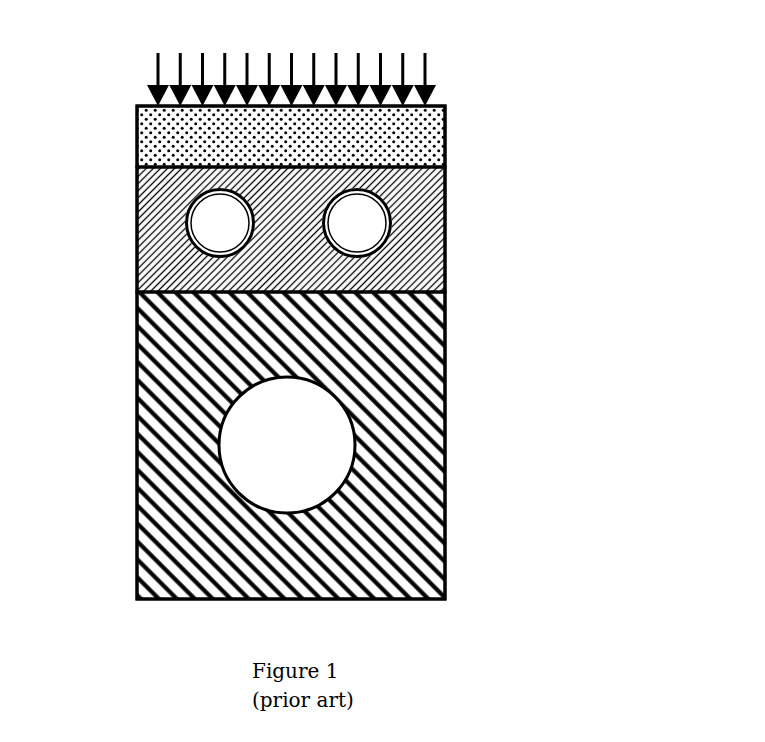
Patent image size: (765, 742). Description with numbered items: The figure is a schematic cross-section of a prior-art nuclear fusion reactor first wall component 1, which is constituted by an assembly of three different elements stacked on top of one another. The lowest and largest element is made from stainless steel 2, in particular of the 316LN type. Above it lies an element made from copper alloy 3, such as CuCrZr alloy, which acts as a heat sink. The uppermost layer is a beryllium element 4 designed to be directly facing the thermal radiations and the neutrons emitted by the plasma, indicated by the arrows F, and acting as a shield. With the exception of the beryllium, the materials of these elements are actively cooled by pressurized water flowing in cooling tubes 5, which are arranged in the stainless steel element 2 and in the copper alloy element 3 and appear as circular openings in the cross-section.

The first wall component 1 is at (600, 359).
The element made from stainless steel 2 is at (158, 502).
The element made from copper alloy 3 is at (165, 258).
The beryllium element 4 is at (410, 131).
The cooling tubes 5 is at (357, 442).
The arrows F is at (427, 69).